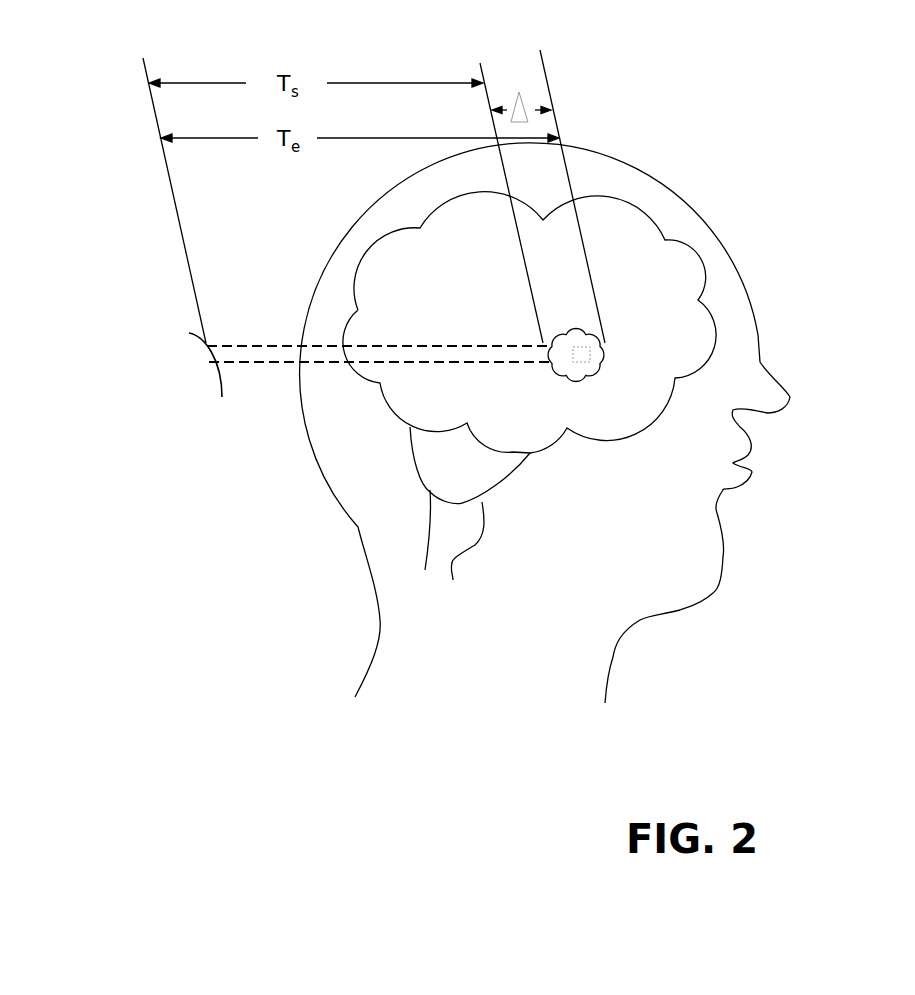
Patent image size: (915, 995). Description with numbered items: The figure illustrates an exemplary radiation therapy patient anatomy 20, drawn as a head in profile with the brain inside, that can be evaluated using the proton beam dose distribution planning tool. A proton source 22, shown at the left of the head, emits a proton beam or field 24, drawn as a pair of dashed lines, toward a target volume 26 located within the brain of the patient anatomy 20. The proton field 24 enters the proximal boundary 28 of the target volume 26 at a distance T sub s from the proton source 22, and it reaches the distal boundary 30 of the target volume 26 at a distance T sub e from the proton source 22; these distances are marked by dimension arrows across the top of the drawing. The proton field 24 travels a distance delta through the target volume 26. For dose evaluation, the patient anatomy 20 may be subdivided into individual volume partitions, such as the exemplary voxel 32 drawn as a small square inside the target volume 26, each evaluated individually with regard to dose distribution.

The radiation therapy patient anatomy 20 is at (800, 285).
The proton source 22 is at (205, 411).
The proton beam or field 24 is at (272, 384).
The target volume 26 is at (578, 382).
The proximal boundary 28 is at (540, 380).
The distal boundary 30 is at (629, 350).
The voxel 32 is at (590, 356).